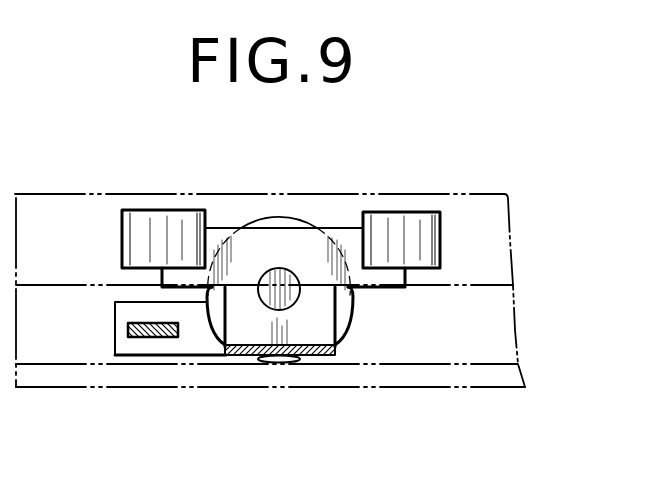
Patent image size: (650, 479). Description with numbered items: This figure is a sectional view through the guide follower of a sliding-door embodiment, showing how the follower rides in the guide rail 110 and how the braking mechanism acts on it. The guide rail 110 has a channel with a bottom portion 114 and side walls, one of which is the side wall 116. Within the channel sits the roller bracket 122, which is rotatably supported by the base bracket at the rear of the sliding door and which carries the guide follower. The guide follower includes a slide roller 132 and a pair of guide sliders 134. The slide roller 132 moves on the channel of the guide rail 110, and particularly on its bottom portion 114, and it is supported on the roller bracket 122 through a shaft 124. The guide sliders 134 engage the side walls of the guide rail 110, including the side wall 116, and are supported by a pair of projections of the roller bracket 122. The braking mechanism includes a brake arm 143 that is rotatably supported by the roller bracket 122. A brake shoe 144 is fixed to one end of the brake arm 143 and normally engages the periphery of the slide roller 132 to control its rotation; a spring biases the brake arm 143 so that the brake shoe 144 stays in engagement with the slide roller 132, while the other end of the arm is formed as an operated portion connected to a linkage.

The guide rail 110 is at (67, 193).
The bottom portion 114 is at (484, 362).
The side wall 116 is at (514, 262).
The roller bracket 122 is at (307, 333).
The shaft 124 is at (283, 289).
The slide roller 132 is at (290, 219).
The guide sliders 134 is at (160, 210).
The brake arm 143 is at (168, 338).
The brake shoe 144 is at (113, 327).